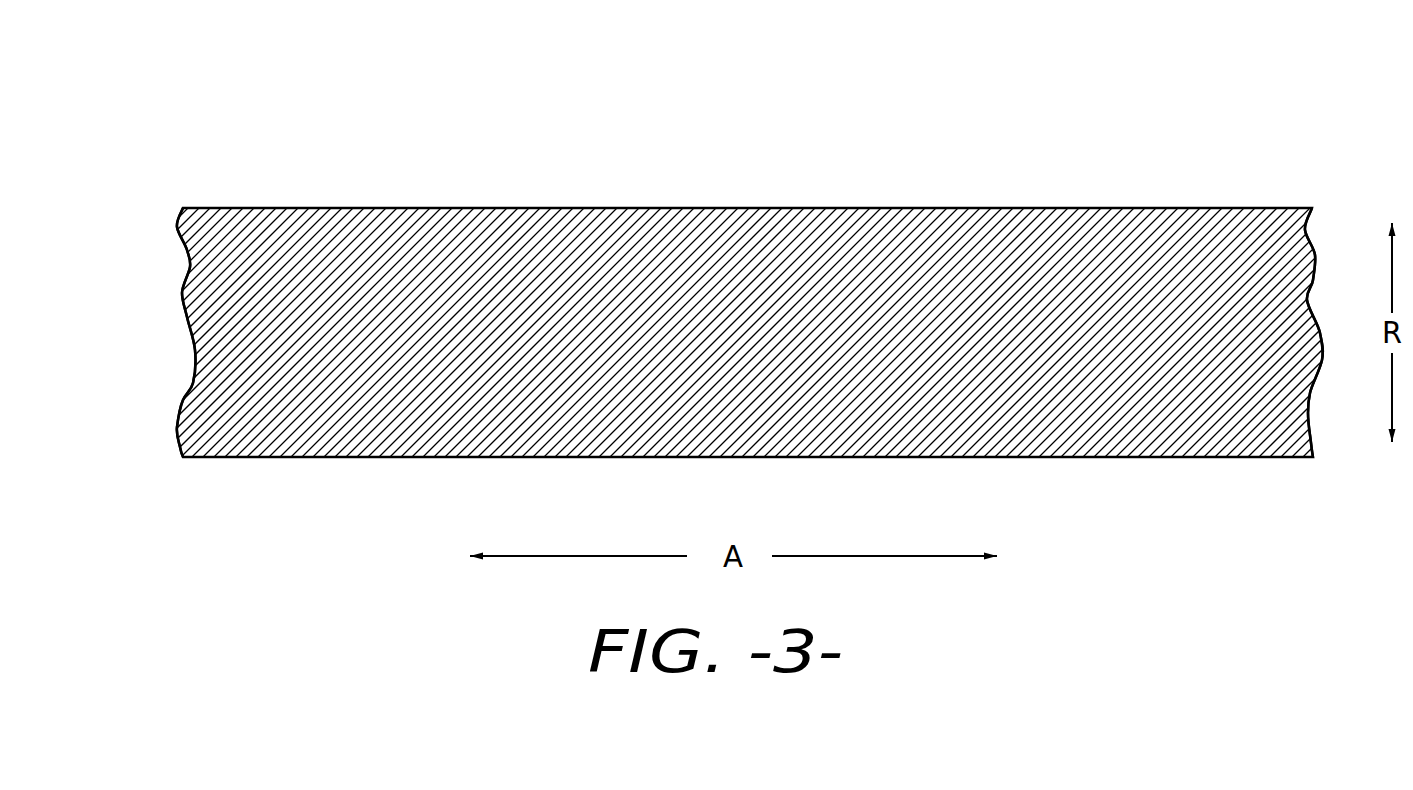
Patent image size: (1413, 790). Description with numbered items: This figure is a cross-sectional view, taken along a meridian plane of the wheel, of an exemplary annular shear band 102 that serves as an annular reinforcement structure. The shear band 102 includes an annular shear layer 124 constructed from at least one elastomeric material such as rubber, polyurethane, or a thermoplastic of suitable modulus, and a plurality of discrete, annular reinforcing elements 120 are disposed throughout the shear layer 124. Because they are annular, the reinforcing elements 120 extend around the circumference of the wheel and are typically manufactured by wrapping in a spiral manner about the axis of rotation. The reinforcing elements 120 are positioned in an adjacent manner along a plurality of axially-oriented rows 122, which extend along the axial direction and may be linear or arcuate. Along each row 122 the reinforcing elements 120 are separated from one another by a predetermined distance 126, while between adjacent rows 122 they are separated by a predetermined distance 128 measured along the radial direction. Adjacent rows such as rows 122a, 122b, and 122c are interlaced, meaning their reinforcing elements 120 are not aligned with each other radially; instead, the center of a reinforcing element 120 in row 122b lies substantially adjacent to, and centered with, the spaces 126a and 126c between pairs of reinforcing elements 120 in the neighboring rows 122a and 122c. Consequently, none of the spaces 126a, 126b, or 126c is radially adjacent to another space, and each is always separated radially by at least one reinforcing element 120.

The shear band 102 is at (155, 207).
The reinforcing elements 120 is at (258, 228).
The axially-oriented rows 122 is at (157, 438).
The axially-oriented row 122a is at (173, 222).
The axially-oriented row 122b is at (177, 247).
The axially-oriented row 122c is at (180, 268).
The shear layer 124 is at (1095, 218).
The predetermined distance 126 is at (403, 447).
The space 126a is at (232, 223).
The space 126b is at (272, 237).
The space 126c is at (489, 257).
The predetermined distance 128 is at (1310, 248).